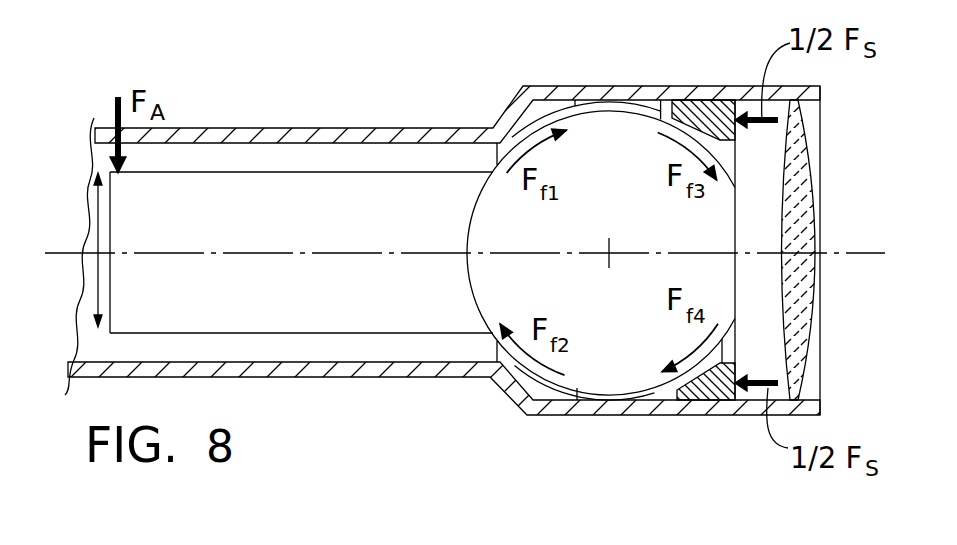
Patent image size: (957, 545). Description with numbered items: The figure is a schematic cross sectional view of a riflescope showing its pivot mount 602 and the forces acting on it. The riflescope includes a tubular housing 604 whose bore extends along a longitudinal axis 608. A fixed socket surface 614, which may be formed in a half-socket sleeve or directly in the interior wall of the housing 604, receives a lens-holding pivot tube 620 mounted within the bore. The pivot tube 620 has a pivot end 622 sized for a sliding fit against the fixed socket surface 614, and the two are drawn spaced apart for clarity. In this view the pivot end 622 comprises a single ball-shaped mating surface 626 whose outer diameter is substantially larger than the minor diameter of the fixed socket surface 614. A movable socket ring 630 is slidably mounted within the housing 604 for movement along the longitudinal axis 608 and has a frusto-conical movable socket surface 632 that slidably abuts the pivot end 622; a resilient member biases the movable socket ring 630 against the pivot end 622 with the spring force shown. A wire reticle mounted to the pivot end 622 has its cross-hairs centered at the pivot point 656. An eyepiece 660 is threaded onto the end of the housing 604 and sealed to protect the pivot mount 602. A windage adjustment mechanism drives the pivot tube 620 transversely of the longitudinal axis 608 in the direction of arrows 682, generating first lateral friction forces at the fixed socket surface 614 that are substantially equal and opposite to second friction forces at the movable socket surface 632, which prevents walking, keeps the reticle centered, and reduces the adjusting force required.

The pivot mount 602 is at (442, 288).
The tubular housing 604 is at (355, 128).
The longitudinal axis 608 is at (305, 240).
The fixed socket surface 614 is at (503, 112).
The lens-holding pivot tube 620 is at (227, 170).
The pivot end 622 is at (610, 392).
The ball-shaped mating surface 626 is at (663, 107).
The movable socket ring 630 is at (708, 392).
The movable socket surface 632 is at (717, 130).
The pivot point 656 is at (608, 252).
The eyepiece 660 is at (800, 172).
The arrows 682 is at (92, 232).